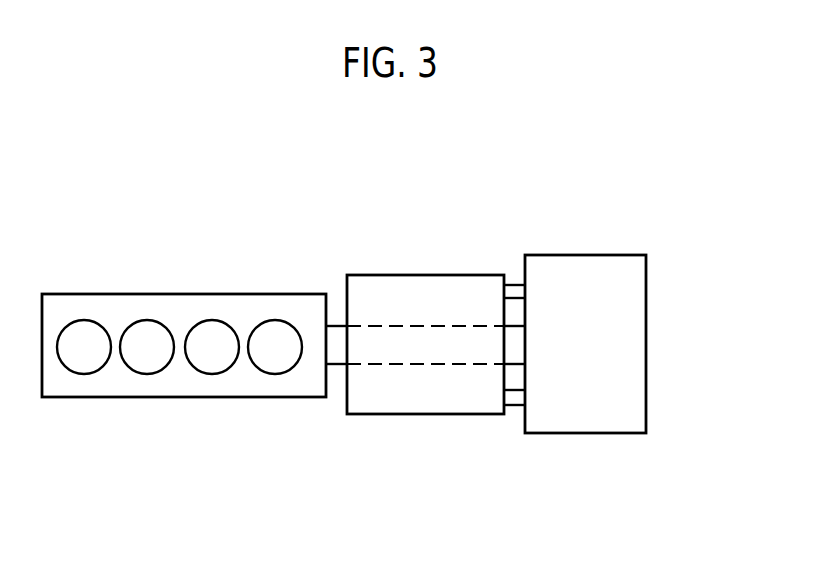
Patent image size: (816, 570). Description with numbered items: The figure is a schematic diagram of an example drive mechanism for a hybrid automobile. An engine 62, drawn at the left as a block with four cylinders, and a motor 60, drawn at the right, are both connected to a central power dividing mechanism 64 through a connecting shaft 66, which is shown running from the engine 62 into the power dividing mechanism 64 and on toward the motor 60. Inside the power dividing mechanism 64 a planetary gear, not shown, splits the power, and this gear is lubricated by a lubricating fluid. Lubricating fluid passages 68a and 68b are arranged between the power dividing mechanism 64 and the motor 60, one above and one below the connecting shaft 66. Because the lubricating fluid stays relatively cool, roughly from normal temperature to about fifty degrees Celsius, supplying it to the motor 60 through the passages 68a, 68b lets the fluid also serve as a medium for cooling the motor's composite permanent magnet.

The motor 60 is at (638, 282).
The engine 62 is at (232, 302).
The power dividing mechanism 64 is at (422, 288).
The connecting shaft 66 is at (336, 352).
The lubricating fluid passage 68a is at (512, 290).
The lubricating fluid passage 68b is at (515, 400).